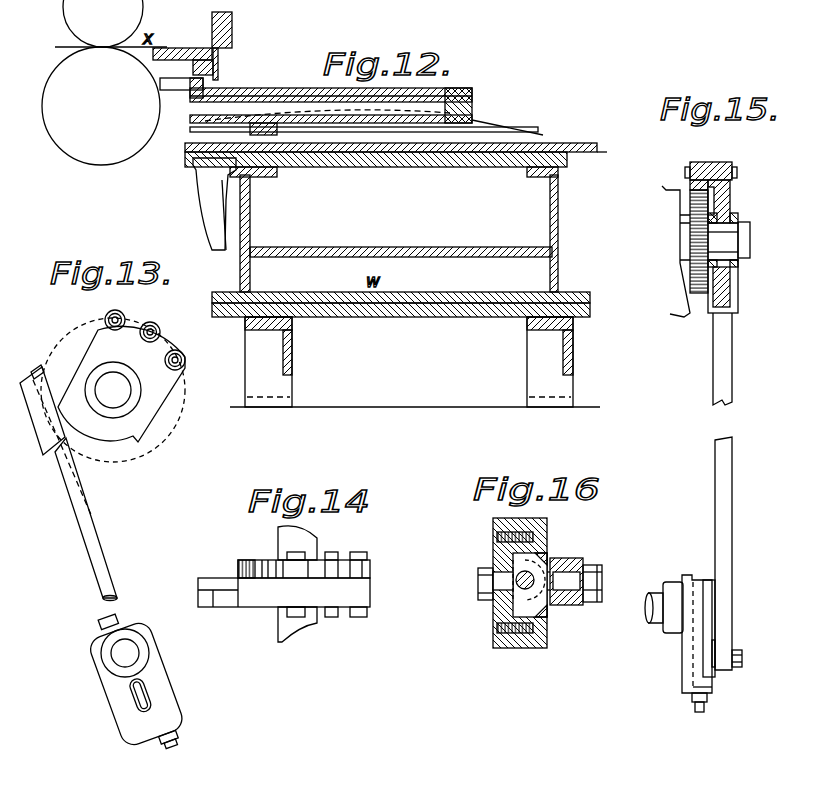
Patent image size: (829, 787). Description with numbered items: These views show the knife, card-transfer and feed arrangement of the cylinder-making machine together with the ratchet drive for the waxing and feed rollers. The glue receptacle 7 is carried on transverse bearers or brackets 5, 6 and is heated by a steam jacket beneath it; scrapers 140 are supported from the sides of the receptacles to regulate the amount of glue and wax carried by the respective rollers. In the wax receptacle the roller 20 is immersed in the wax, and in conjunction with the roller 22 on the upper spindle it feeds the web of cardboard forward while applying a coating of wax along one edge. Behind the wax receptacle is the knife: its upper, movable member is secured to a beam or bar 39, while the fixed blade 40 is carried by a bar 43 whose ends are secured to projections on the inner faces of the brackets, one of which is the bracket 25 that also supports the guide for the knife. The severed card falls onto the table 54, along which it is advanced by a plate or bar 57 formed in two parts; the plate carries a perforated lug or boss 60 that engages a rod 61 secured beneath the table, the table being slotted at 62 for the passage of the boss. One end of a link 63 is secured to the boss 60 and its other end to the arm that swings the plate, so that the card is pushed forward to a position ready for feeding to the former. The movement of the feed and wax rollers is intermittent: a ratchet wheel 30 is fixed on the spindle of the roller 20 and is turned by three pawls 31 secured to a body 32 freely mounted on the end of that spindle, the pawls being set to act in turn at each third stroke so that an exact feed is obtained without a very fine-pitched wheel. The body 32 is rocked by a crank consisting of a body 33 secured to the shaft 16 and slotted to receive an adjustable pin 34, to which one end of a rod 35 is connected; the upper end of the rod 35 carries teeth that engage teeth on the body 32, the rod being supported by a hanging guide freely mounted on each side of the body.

In FIG. 12, the roller 22 is at (103, 23).
In FIG. 12, the roller 20 is at (101, 106).
In FIG. 12, the bar 43 is at (183, 49).
In FIG. 12, the beam or bar 39 is at (232, 40).
In FIG. 12, the fixed blade 40 is at (218, 68).
In FIG. 12, the plate or bar 57 is at (190, 92).
In FIG. 12, the table 54 is at (268, 86).
In FIG. 12, the slot 62 is at (396, 96).
In FIG. 12, the rod 61 is at (336, 117).
In FIG. 12, the link 63 is at (538, 133).
In FIG. 12, the perforated lug or boss 60 is at (235, 131).
In FIG. 12, the scrapers 140 is at (571, 149).
In FIG. 12, the glue receptacle 7 is at (394, 229).
In FIG. 12, the transverse bearer or bracket 5 is at (268, 362).
In FIG. 12, the transverse bearer or bracket 6 is at (550, 362).
In FIG. 13, the pawls 31 is at (172, 350).
In FIG. 14, the pawls 31 is at (358, 567).
In FIG. 15, the pawls 31 is at (711, 161).
In FIG. 13, the body 32 is at (120, 452).
In FIG. 15, the body 32 is at (733, 199).
In FIG. 13, the ratchet wheel 30 is at (76, 343).
In FIG. 14, the ratchet wheel 30 is at (256, 567).
In FIG. 15, the ratchet wheel 30 is at (740, 223).
In FIG. 15, the bracket 25 is at (674, 251).
In FIG. 13, the rod 35 is at (98, 545).
In FIG. 16, the rod 35 is at (569, 567).
In FIG. 15, the rod 35 is at (718, 456).
In FIG. 13, the body 33 is at (108, 700).
In FIG. 16, the body 33 is at (497, 552).
In FIG. 15, the body 33 is at (693, 590).
In FIG. 16, the pin 34 is at (566, 582).
In FIG. 15, the pin 34 is at (743, 658).
In FIG. 13, the shaft 16 is at (125, 653).
In FIG. 15, the shaft 16 is at (660, 623).